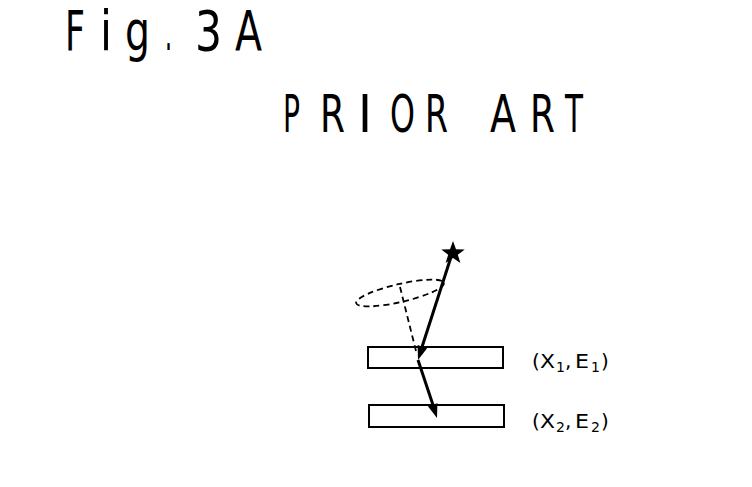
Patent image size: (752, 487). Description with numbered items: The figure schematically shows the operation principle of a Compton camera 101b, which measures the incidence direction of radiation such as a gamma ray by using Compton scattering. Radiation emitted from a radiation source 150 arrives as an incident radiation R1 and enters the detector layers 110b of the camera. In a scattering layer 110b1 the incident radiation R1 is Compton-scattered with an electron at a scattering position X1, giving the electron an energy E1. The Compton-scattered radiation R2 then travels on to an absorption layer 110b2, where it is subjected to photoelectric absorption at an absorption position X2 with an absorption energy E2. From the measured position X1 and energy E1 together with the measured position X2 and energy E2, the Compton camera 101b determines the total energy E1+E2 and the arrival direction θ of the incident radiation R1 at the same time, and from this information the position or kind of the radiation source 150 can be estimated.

The Compton camera 101b is at (276, 278).
The radiation source 150 is at (447, 243).
The incident radiation R1 is at (441, 288).
The Compton-scattered radiation R2 is at (428, 384).
The scattering and absorption layers 110b is at (344, 387).
The scattering layer 110b1 is at (368, 353).
The absorption layer 110b2 is at (384, 417).